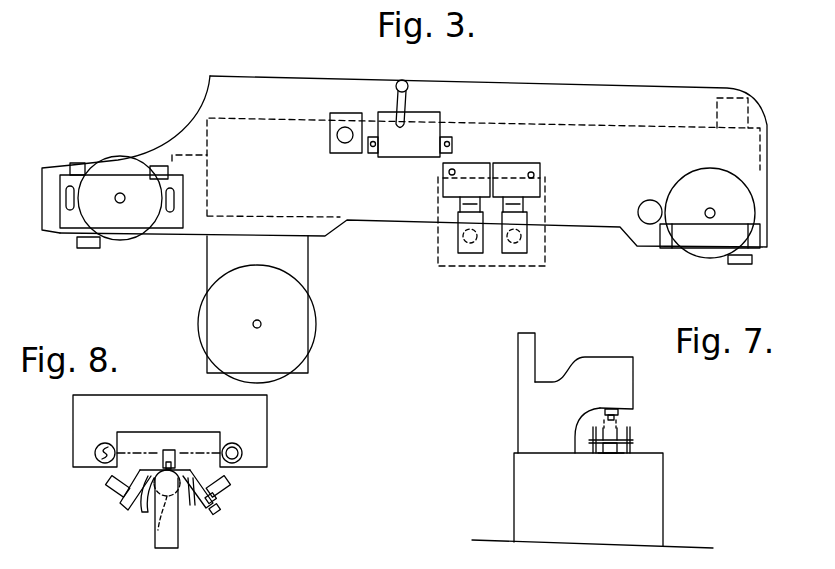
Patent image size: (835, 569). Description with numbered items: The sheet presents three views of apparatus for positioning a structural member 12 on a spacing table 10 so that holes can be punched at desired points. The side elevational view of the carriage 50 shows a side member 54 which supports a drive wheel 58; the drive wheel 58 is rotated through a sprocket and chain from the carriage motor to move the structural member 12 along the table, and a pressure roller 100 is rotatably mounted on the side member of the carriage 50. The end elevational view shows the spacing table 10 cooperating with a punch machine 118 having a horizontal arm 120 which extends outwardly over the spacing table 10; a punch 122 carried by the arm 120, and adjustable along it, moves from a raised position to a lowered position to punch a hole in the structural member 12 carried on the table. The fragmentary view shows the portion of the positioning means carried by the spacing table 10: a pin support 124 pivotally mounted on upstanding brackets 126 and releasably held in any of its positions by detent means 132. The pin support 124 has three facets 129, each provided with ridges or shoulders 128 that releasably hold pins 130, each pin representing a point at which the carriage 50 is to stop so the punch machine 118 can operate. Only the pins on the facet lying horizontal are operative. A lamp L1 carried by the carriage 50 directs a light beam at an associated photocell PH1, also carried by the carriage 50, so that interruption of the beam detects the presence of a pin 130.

In FIG. 3, the carriage 50 is at (584, 80).
In FIG. 3, the pressure roller 100 is at (122, 232).
In FIG. 3, the side member 54 is at (302, 261).
In FIG. 3, the drive wheel 58 is at (307, 318).
In FIG. 8, the lamp L1 is at (97, 460).
In FIG. 8, the photocell PH1 is at (241, 451).
In FIG. 8, the upstanding bracket 126 is at (178, 539).
In FIG. 8, the detent means 132 is at (151, 529).
In FIG. 8, the facet 129 is at (120, 506).
In FIG. 8, the pin 130 is at (170, 450).
In FIG. 8, the ridge or shoulder 128 is at (145, 512).
In FIG. 8, the pin support 124 is at (218, 513).
In FIG. 7, the spacing table 10 is at (667, 482).
In FIG. 7, the punch machine 118 is at (517, 388).
In FIG. 7, the horizontal arm 120 is at (627, 365).
In FIG. 7, the punch 122 is at (620, 413).
In FIG. 7, the structural member 12 is at (630, 441).